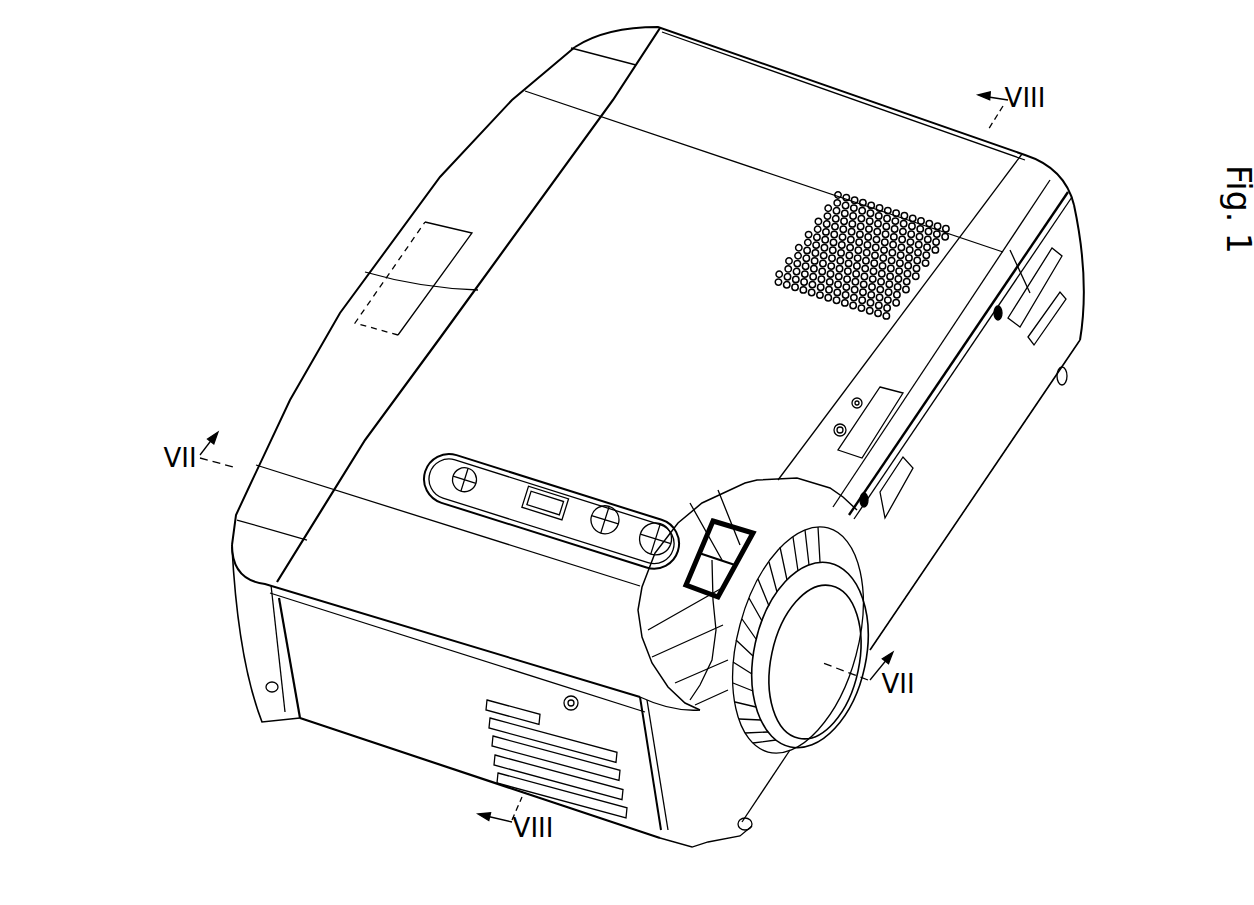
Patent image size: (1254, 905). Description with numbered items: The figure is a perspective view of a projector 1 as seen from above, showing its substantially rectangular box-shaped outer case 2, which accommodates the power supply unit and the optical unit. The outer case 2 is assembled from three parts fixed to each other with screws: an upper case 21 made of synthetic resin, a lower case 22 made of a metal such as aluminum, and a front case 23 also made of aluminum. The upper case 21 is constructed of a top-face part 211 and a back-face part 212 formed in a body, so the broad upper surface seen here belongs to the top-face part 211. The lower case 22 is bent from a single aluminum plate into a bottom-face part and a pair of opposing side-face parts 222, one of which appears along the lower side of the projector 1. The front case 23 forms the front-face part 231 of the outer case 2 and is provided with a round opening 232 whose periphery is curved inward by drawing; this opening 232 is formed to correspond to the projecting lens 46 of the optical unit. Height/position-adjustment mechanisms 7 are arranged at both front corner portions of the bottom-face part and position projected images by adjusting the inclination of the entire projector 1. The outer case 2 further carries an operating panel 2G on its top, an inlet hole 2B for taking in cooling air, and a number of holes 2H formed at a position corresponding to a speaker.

The projector 1 is at (463, 118).
The outer case 2 is at (957, 168).
The upper case 21 is at (833, 117).
The top-face part 211 is at (758, 90).
The lower case 22 is at (358, 717).
The back-face part 212 is at (262, 668).
The side-face parts 222 is at (430, 743).
The front case 23 is at (960, 503).
The front-face part 231 is at (978, 462).
The round opening 232 is at (838, 578).
The operating panel 2G is at (586, 508).
The holes 2H is at (893, 208).
The inlet hole 2B is at (583, 800).
The projecting lens 46 is at (815, 720).
The height/position-adjustment mechanisms 7 is at (1068, 380).